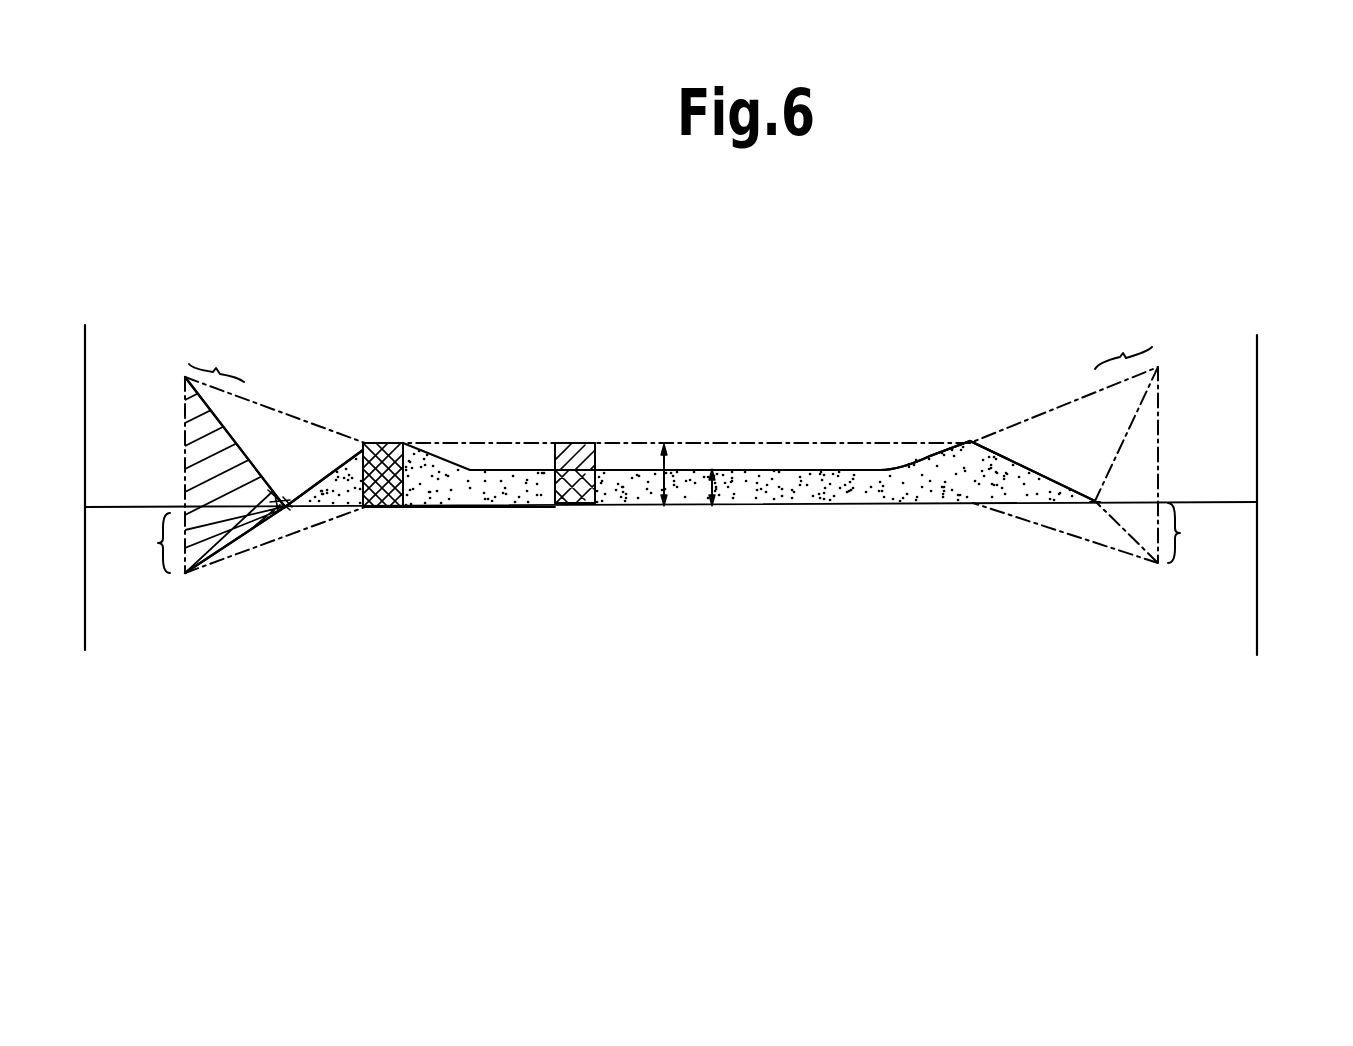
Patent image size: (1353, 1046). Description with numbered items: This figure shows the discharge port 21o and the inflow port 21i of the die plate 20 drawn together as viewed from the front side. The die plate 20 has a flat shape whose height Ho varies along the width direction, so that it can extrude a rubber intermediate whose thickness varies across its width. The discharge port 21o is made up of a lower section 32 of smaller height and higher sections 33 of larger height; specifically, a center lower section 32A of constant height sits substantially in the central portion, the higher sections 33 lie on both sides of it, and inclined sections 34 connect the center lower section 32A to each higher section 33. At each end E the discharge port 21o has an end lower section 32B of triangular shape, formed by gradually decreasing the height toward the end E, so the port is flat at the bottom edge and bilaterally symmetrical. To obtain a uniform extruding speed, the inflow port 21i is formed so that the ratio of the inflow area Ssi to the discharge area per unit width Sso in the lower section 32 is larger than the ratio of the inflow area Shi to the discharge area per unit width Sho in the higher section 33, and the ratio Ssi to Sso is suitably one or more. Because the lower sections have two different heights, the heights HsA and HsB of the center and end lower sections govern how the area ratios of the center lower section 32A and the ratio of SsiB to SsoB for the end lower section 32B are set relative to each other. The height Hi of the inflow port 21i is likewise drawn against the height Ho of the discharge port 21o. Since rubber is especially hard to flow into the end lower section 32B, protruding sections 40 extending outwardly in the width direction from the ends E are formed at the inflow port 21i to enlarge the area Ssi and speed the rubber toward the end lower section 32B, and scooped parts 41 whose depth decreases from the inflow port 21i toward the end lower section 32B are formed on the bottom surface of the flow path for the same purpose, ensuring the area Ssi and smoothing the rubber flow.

The die plate 20 is at (1257, 447).
The inflow port 21i is at (290, 415).
The discharge port 21o is at (480, 506).
The lower section 32 is at (690, 433).
The center lower section 32A is at (742, 462).
The end lower section 32B is at (1087, 486).
The higher section 33 is at (963, 425).
The inclined section 34 is at (900, 460).
The protruding section 40 is at (671, 444).
The scooped part 41 is at (669, 538).
The end E is at (1095, 501).
The height at the inflow port Hi is at (665, 485).
The height at the discharge port Ho is at (792, 528).
The height of the center lower section HsA is at (713, 484).
The height of the end lower section HsB is at (300, 508).
The area at the inflow port for the lower section Ssi is at (616, 346).
The inflow port area for the end lower section SsiB is at (246, 450).
The area per unit width in the lower section at the discharge port Sso is at (607, 612).
The discharge port area for the end lower section SsoB is at (285, 508).
The area at the inflow port for the higher section Shi is at (393, 443).
The area per unit width in the higher section at the discharge port Sho is at (387, 507).